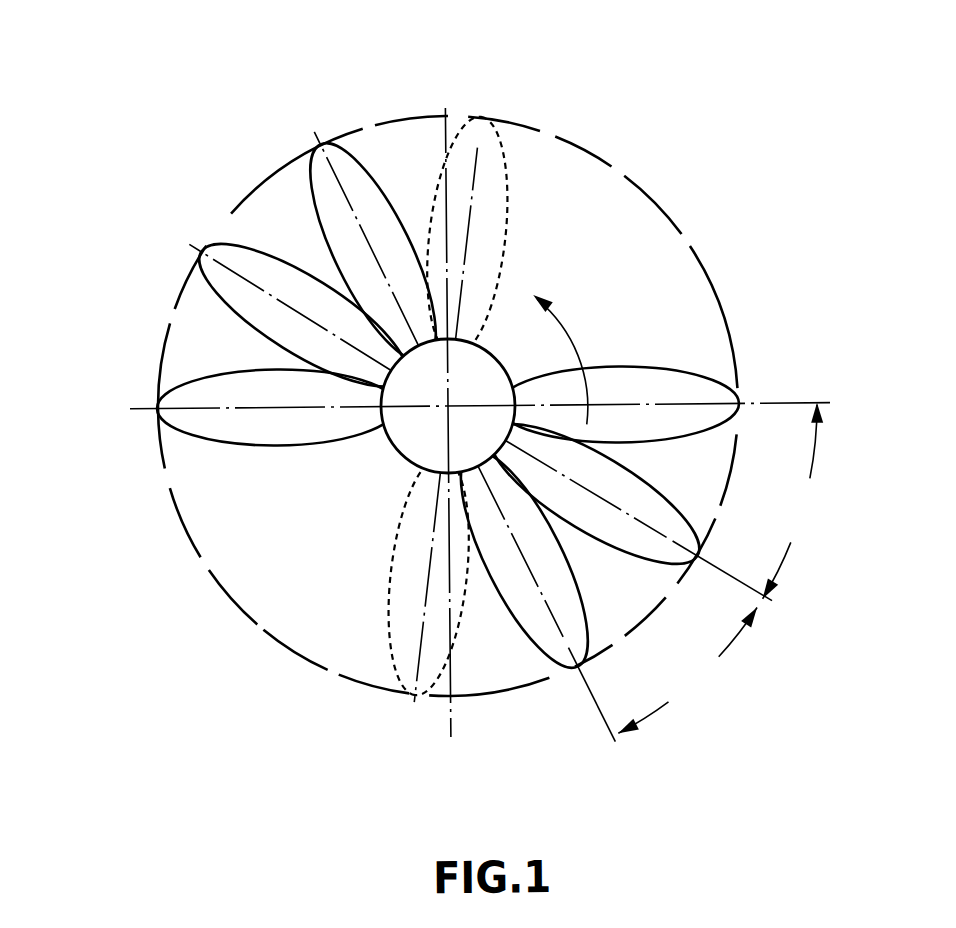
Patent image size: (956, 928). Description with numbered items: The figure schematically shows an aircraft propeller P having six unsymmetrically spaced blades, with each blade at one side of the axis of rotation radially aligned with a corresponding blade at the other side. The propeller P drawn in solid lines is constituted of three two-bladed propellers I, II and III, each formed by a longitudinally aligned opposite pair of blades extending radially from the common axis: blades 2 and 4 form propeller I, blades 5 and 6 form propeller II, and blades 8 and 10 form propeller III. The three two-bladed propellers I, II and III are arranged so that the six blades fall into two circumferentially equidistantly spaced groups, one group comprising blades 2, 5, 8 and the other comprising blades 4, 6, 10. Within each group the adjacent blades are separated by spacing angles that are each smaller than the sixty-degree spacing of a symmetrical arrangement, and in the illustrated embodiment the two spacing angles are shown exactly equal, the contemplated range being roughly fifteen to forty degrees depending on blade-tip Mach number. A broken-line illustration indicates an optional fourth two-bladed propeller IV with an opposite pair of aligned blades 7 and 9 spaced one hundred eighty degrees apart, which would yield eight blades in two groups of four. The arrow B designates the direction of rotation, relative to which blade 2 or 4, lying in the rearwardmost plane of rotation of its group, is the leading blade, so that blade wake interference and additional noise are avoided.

The propeller blade 2 is at (658, 381).
The propeller blade 4 is at (255, 434).
The propeller blade 5 is at (652, 498).
The propeller blade 6 is at (250, 262).
The propeller blade 7 is at (490, 158).
The propeller blade 8 is at (573, 607).
The propeller blade 9 is at (400, 616).
The propeller blade 10 is at (350, 160).
The propeller P is at (447, 398).
The direction of rotation arrow B is at (567, 332).
The 2-bladed propeller I is at (142, 356).
The 2-bladed propeller II is at (182, 204).
The 2-bladed propeller III is at (268, 133).
The 2-bladed propeller IV is at (482, 66).